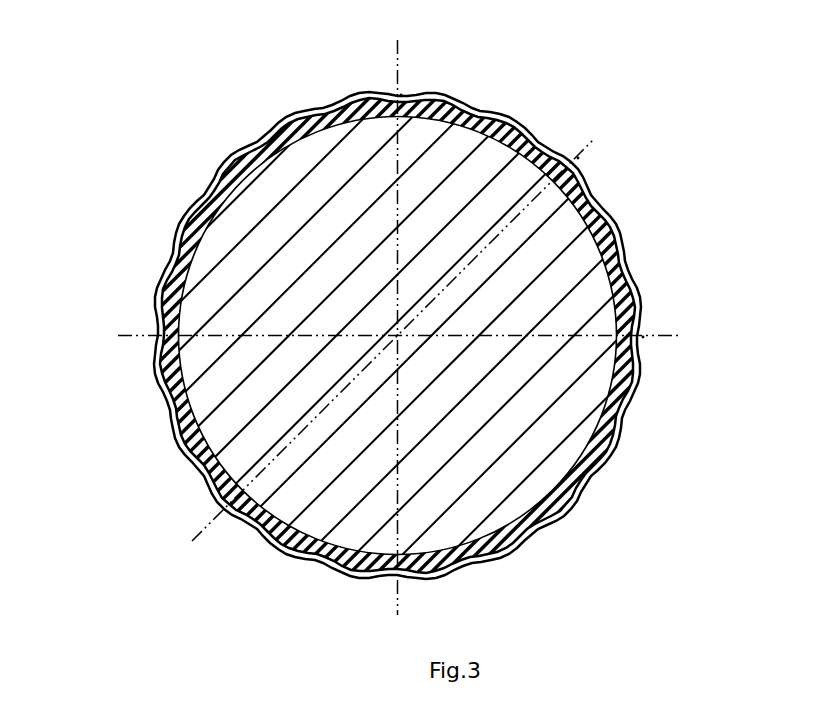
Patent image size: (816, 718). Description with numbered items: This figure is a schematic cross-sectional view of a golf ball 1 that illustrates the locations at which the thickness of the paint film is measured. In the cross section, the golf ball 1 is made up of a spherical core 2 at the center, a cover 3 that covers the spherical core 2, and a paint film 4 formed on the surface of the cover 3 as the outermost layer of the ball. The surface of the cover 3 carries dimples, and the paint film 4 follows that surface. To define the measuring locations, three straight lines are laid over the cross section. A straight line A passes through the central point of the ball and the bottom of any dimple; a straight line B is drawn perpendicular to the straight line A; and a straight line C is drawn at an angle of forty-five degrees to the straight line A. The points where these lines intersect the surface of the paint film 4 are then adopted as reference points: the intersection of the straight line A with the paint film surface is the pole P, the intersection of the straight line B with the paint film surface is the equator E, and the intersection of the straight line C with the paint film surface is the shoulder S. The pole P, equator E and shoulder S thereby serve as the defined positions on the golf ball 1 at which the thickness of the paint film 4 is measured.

The golf ball 1 is at (408, 349).
The spherical core 2 is at (232, 226).
The cover 3 is at (172, 234).
The paint film 4 is at (155, 302).
The straight line A is at (396, 313).
The straight line B is at (411, 335).
The straight line C is at (403, 327).
The shoulder S is at (578, 158).
The pole P is at (401, 94).
The equator E is at (643, 337).